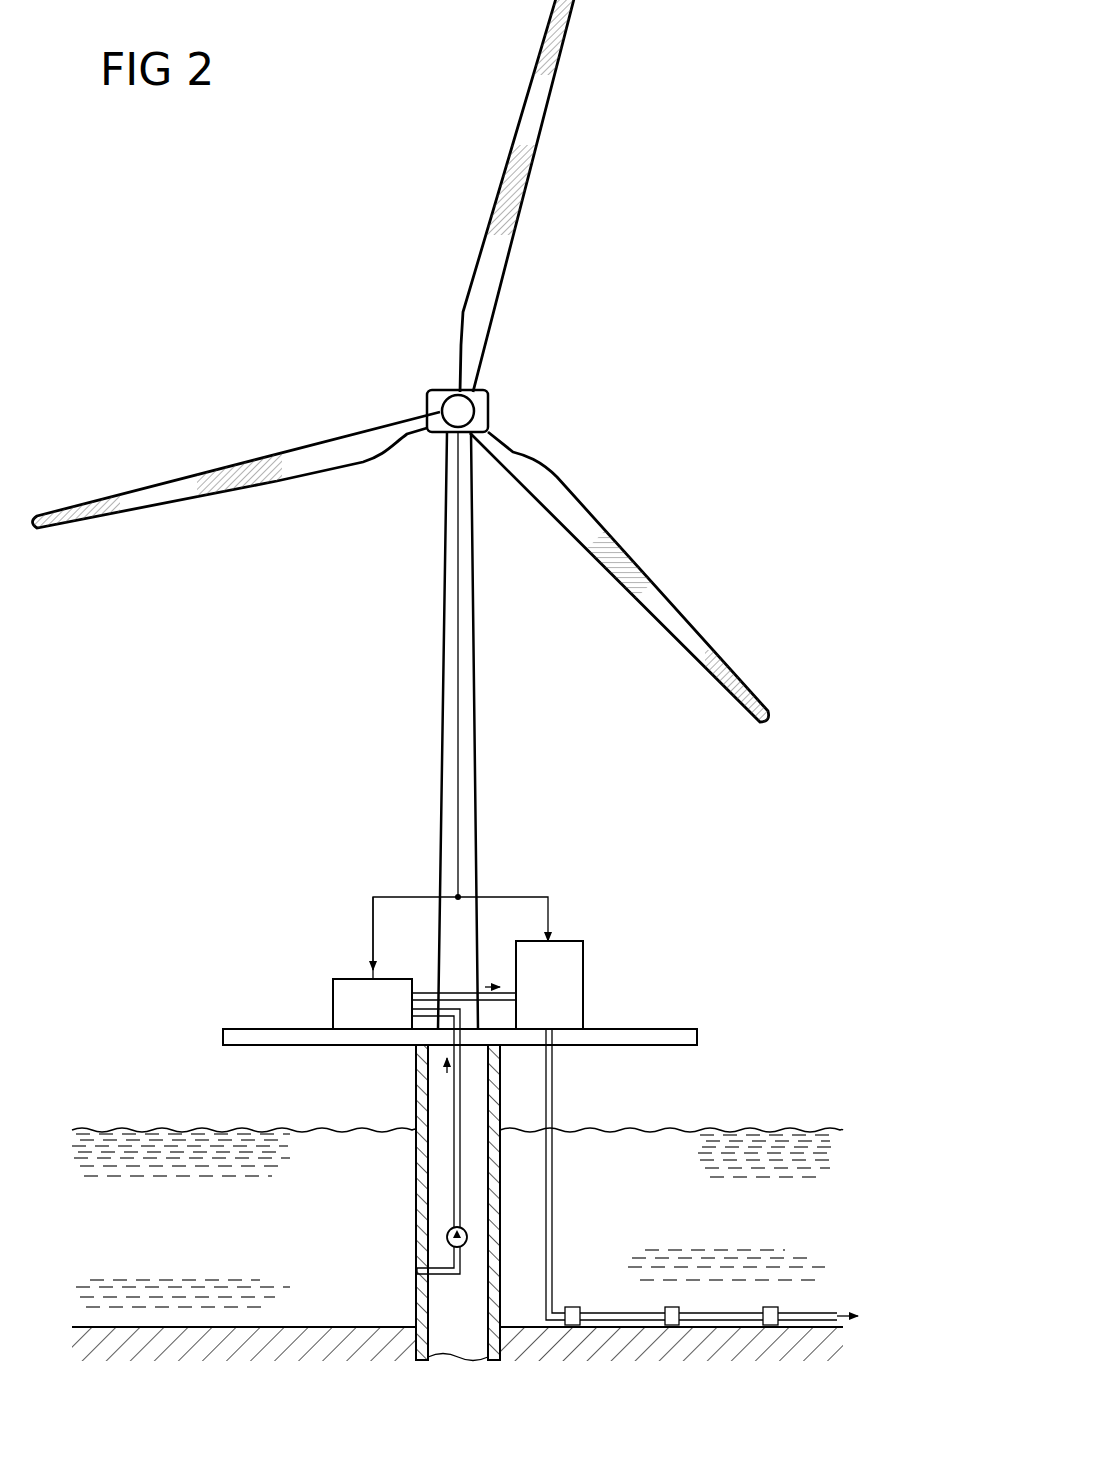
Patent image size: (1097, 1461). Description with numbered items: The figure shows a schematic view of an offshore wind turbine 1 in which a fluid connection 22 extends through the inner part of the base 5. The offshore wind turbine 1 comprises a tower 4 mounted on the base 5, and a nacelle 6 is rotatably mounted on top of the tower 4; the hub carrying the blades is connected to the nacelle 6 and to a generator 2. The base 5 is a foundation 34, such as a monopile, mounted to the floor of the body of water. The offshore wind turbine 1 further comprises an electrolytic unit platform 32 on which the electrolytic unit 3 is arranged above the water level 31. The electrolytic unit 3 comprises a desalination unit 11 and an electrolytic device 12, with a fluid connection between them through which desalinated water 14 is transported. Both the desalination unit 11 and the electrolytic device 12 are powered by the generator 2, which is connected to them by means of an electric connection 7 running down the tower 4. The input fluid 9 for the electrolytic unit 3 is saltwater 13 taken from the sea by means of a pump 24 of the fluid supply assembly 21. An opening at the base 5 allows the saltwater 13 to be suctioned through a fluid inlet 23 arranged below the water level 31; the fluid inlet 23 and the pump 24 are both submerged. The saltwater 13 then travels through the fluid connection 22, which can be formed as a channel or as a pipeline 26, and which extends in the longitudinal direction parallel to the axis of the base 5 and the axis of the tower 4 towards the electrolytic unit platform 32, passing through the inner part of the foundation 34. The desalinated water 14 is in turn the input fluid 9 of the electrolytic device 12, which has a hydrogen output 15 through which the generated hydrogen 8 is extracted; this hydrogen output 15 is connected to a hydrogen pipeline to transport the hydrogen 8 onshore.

The offshore wind turbine 1 is at (703, 368).
The generator 2 is at (410, 386).
The electrolytic unit 3 is at (606, 864).
The tower 4 is at (440, 674).
The base 5 is at (401, 1203).
The foundation 34 is at (416, 1311).
The nacelle 6 is at (493, 407).
The electric connection 7 is at (456, 793).
The hydrogen 8 is at (702, 1177).
The hydrogen output 15 is at (553, 1063).
The input fluid 9 is at (130, 1240).
The desalination unit 11 is at (333, 1001).
The electrolytic device 12 is at (583, 983).
The saltwater 13 is at (432, 1013).
The desalinated water 14 is at (420, 992).
The fluid supply assembly 21 is at (262, 1091).
The fluid connection 22 is at (383, 1211).
The pipeline 26 is at (455, 1152).
The fluid inlet 23 is at (416, 1271).
The pump 24 is at (468, 1240).
The water level 31 is at (800, 1128).
The electrolytic unit platform 32 is at (700, 1034).